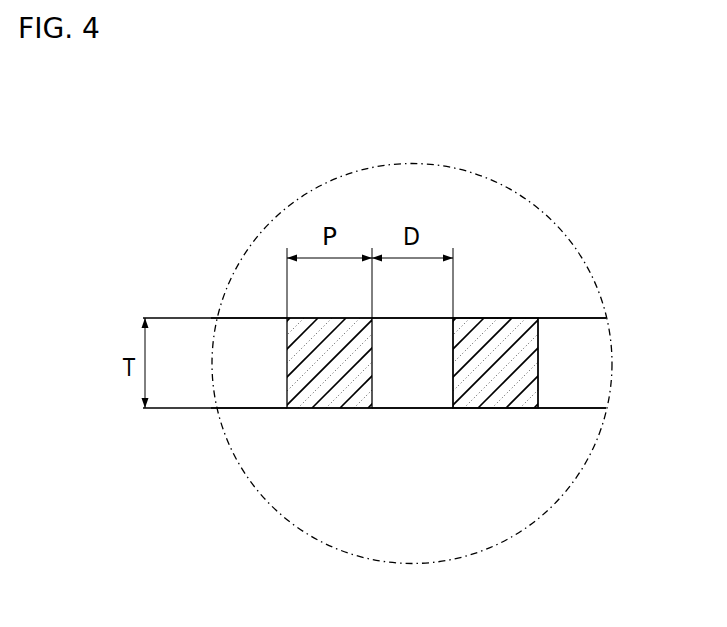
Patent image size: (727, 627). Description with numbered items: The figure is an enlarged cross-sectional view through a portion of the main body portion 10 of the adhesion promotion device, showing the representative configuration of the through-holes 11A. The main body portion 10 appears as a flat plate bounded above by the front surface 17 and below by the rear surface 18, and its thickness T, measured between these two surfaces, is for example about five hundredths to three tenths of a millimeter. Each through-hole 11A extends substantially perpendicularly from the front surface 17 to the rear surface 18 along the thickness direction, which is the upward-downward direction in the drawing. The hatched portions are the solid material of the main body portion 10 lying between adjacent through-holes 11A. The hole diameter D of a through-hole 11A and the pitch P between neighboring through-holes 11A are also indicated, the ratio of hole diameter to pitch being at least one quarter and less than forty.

The main body portion 10 is at (262, 312).
The through-hole 11A is at (255, 409).
The front surface 17 is at (503, 318).
The rear surface 18 is at (503, 409).